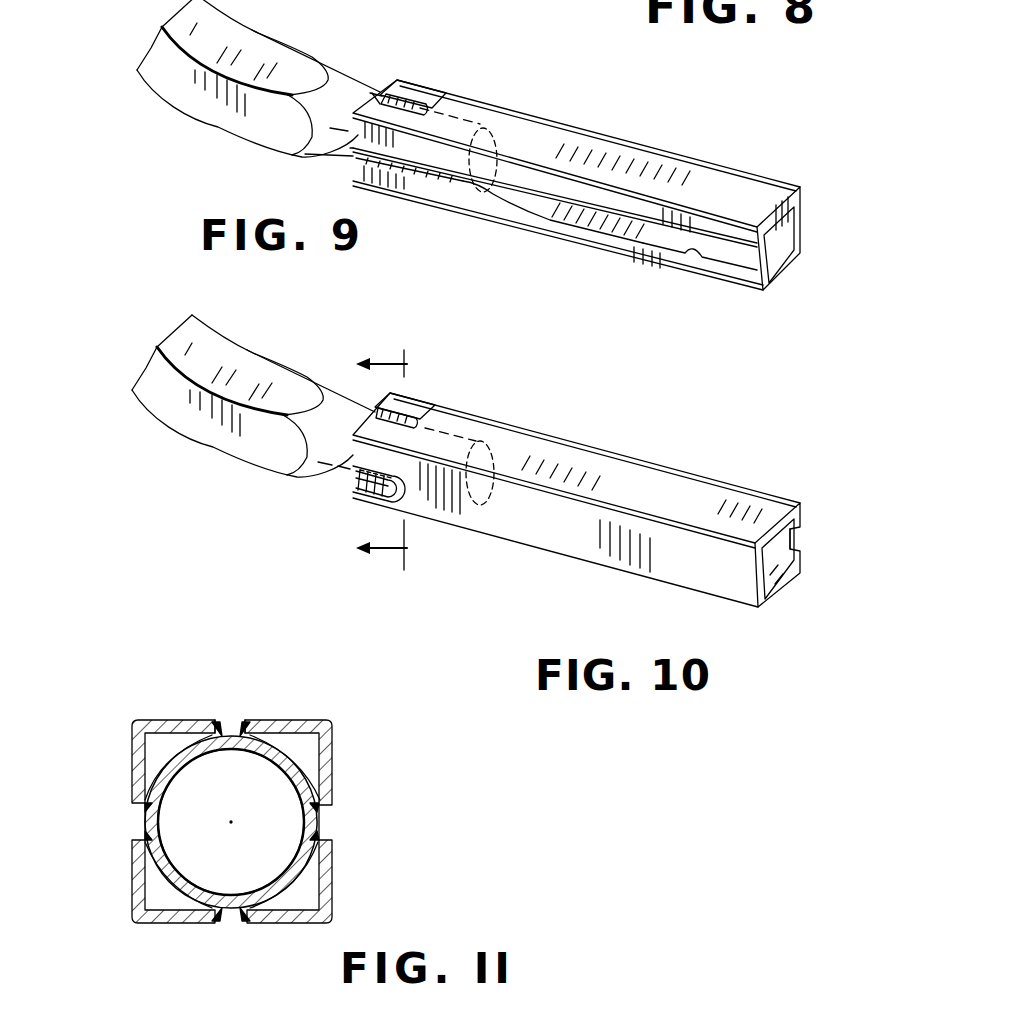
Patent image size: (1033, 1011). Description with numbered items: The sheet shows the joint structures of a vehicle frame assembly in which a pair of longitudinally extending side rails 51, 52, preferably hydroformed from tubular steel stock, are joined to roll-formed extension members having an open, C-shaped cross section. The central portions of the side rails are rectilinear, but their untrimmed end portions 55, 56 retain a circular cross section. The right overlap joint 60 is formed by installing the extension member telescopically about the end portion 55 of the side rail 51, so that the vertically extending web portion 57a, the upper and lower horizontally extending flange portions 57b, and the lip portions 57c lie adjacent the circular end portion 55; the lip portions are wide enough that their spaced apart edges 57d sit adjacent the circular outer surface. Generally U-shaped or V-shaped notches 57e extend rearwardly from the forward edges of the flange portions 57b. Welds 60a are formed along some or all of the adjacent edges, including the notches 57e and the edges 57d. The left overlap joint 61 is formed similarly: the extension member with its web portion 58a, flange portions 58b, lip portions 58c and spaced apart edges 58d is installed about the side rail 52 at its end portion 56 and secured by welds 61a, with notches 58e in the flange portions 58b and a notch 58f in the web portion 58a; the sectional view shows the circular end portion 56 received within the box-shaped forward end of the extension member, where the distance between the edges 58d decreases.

In FIG. 9, the side rail 51 is at (273, 67).
In FIG. 10, the side rail 52 is at (237, 370).
In FIG. 9, the side rail end portion 55 is at (345, 133).
In FIG. 10, the side rail end portion 56 is at (351, 413).
In FIG. 11, the side rail end portion 56 is at (305, 760).
In FIG. 9, the vertically extending web portion 57a is at (787, 217).
In FIG. 9, the horizontally extending flange portions 57b is at (593, 160).
In FIG. 9, the lip portions 57c is at (623, 248).
In FIG. 9, the spaced apart edges 57d is at (698, 248).
In FIG. 9, the notches 57e is at (410, 100).
In FIG. 10, the vertically extending web portion 58a is at (592, 543).
In FIG. 11, the vertically extending web portion 58a is at (133, 770).
In FIG. 10, the horizontally extending flange portions 58b is at (593, 463).
In FIG. 11, the horizontally extending flange portions 58b is at (287, 720).
In FIG. 10, the lip portions 58c is at (802, 517).
In FIG. 11, the lip portions 58c is at (330, 777).
In FIG. 10, the spaced apart edges 58d is at (800, 537).
In FIG. 11, the spaced apart edges 58d is at (327, 830).
In FIG. 10, the notches 58e is at (420, 418).
In FIG. 11, the notches 58e is at (233, 723).
In FIG. 10, the notch 58f is at (360, 487).
In FIG. 11, the notch 58f is at (130, 827).
In FIG. 9, the overlap joint 60 is at (404, 66).
In FIG. 9, the welds 60a is at (375, 98).
In FIG. 10, the overlap joint 61 is at (430, 387).
In FIG. 11, the overlap joint 61 is at (372, 713).
In FIG. 10, the welds 61a is at (375, 482).
In FIG. 11, the welds 61a is at (222, 720).